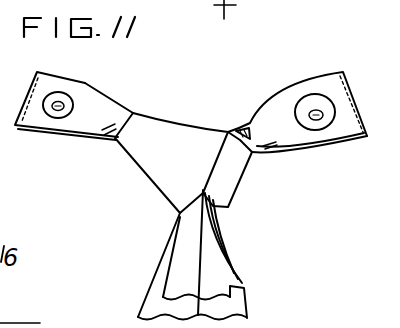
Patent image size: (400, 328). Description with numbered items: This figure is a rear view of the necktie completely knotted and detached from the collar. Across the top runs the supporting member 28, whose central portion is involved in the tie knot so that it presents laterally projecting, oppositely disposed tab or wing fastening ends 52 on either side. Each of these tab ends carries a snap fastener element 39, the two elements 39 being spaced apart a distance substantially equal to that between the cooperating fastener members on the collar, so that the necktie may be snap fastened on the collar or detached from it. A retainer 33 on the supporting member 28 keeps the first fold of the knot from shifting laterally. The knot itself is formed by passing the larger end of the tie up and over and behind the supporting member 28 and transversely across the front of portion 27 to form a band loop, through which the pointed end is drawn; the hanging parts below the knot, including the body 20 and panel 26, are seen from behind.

The tab or wing fastening ends 52 is at (79, 78).
The snap fastener elements 39 is at (51, 112).
The supporting member 28 is at (125, 107).
The garment body 20 is at (231, 203).
The retainer 33 is at (250, 127).
The hanging panel 26 is at (167, 236).
The portion 27 is at (244, 289).